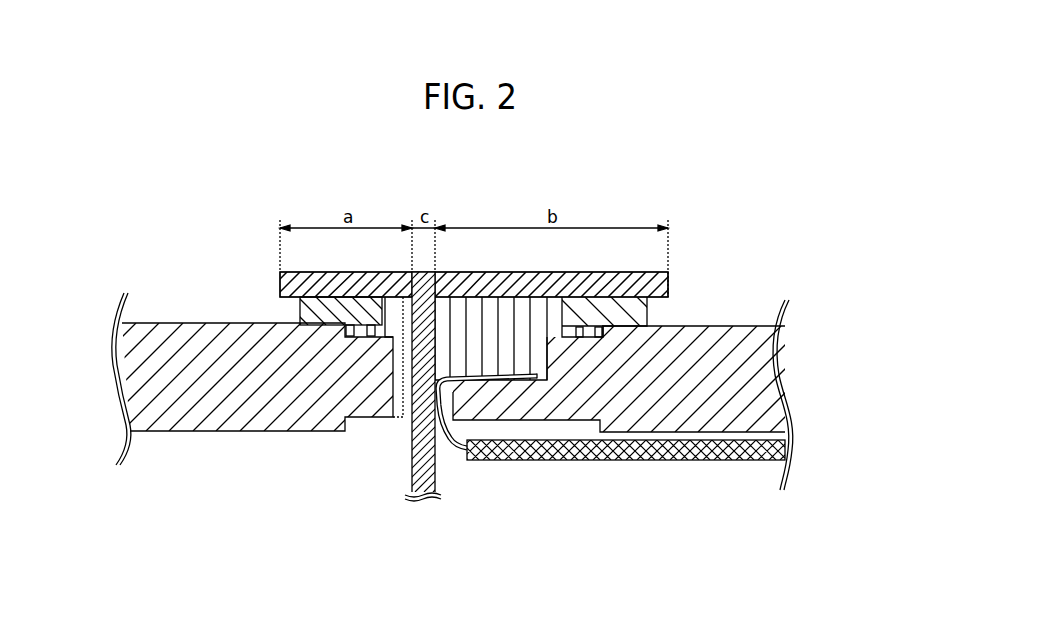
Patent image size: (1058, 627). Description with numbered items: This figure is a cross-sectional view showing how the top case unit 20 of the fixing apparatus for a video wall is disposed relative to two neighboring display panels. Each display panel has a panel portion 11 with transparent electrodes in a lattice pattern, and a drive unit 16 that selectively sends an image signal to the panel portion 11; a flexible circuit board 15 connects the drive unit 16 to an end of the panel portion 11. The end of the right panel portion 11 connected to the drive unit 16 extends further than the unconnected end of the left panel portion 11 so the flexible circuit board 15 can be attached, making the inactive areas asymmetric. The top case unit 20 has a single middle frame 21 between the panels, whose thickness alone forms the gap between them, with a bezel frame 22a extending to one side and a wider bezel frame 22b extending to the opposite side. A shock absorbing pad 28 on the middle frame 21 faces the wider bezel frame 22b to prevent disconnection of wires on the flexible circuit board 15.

The panel portion 11 is at (215, 418).
The flexible circuit board 15 is at (455, 447).
The drive unit 16 is at (578, 462).
The top case unit 20 is at (633, 203).
The middle frame 21 is at (410, 460).
The bezel frame 22a is at (313, 279).
The bezel frame 22b is at (598, 282).
The shock absorbing pad 28 is at (438, 448).